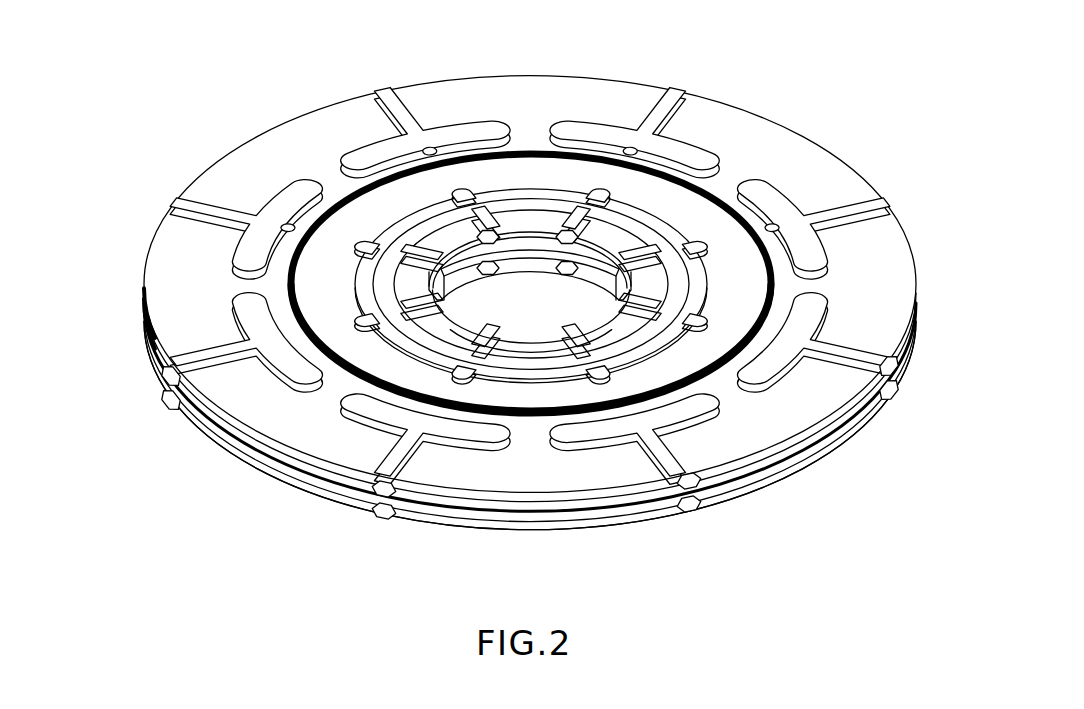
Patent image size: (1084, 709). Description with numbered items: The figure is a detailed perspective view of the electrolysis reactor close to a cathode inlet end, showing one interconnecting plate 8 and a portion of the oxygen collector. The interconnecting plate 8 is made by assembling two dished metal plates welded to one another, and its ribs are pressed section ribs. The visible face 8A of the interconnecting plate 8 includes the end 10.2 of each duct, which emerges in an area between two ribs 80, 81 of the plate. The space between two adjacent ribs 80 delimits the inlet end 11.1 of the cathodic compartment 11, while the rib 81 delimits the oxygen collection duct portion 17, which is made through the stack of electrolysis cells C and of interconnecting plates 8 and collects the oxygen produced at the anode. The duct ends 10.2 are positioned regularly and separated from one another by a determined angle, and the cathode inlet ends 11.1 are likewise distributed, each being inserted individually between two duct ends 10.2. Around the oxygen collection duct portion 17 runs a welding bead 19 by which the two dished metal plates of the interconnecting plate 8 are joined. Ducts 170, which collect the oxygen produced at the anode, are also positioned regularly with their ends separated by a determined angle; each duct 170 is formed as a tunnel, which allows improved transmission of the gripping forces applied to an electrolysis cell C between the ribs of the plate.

The interconnecting plate 8 is at (626, 494).
The face of interconnecting plate 8A is at (562, 480).
The end of duct 10.2 is at (462, 137).
The cathodic compartment 11 is at (312, 437).
The cathode inlet end 11.1 is at (234, 398).
The oxygen collection duct portion 17 is at (542, 307).
The welding bead 19 is at (516, 157).
The rib 80 is at (358, 150).
The rib 81 is at (374, 287).
The oxygen collection duct 170 is at (566, 233).
The electrolysis cell C is at (316, 452).